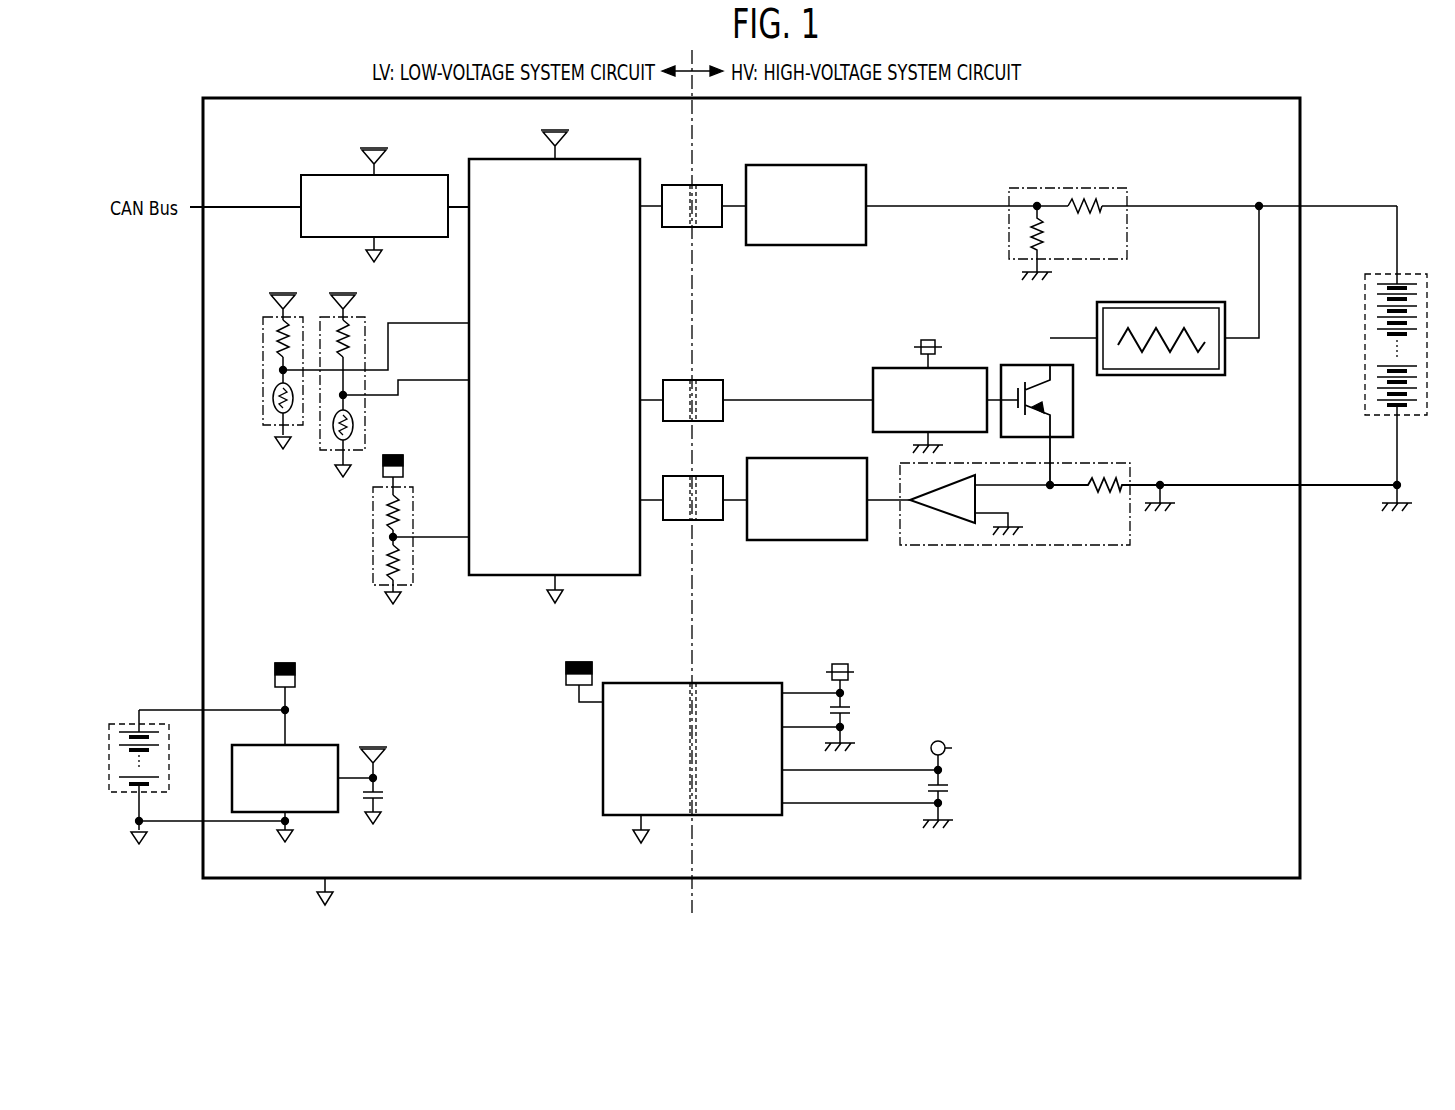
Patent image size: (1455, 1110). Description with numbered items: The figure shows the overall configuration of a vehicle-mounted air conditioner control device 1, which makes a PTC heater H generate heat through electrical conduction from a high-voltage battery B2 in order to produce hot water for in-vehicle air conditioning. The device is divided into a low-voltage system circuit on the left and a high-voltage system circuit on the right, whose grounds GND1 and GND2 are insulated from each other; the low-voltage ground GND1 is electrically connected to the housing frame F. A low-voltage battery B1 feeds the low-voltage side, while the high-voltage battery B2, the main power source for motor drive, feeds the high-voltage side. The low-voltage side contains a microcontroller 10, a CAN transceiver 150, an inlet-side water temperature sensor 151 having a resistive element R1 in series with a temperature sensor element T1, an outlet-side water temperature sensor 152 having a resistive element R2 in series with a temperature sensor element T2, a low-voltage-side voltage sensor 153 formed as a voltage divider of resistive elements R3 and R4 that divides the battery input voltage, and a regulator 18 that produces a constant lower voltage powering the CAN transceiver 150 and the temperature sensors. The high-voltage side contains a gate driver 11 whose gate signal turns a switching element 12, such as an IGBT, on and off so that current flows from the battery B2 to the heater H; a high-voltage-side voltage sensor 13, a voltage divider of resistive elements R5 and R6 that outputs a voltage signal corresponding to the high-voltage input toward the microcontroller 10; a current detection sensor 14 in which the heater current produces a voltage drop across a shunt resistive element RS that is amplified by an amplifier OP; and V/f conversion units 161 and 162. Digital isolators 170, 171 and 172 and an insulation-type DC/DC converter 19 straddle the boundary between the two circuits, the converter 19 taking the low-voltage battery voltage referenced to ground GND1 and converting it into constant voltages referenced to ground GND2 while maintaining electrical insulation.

The vehicle-mounted air conditioner control device 1 is at (152, 134).
The housing frame F is at (1241, 98).
The CAN transceiver 150 is at (324, 175).
The microcontroller 10 is at (642, 178).
The digital isolator 171 is at (707, 185).
The digital isolator 170 is at (705, 380).
The digital isolator 172 is at (710, 520).
The V/f conversion unit 161 is at (827, 165).
The V/f conversion unit 162 is at (785, 458).
The high-voltage-side voltage sensor 13 is at (1043, 206).
The resistive element R5 is at (1090, 200).
The resistive element R6 is at (1027, 243).
The ground of the high-voltage system circuit GND2 is at (1025, 274).
The PTC heater H is at (1160, 302).
The gate driver 11 is at (898, 368).
The switching element 12 is at (1025, 365).
The current detection sensor 14 is at (1132, 510).
The amplifier OP is at (950, 515).
The resistive element RS is at (1095, 492).
The high-voltage battery B2 is at (1410, 275).
The inlet-side water temperature sensor 151 is at (340, 372).
The outlet-side water temperature sensor 152 is at (366, 387).
The resistive element R1 is at (278, 325).
The resistive element R2 is at (352, 335).
The temperature sensor element T1 is at (273, 415).
The temperature sensor element T2 is at (357, 430).
The low-voltage-side voltage sensor 153 is at (365, 520).
The resistive element R3 is at (385, 500).
The resistive element R4 is at (373, 540).
The ground of the low-voltage system circuit GND1 is at (562, 600).
The regulator 18 is at (302, 745).
The low-voltage battery B1 is at (125, 722).
The DC/DC converter 19 is at (720, 683).